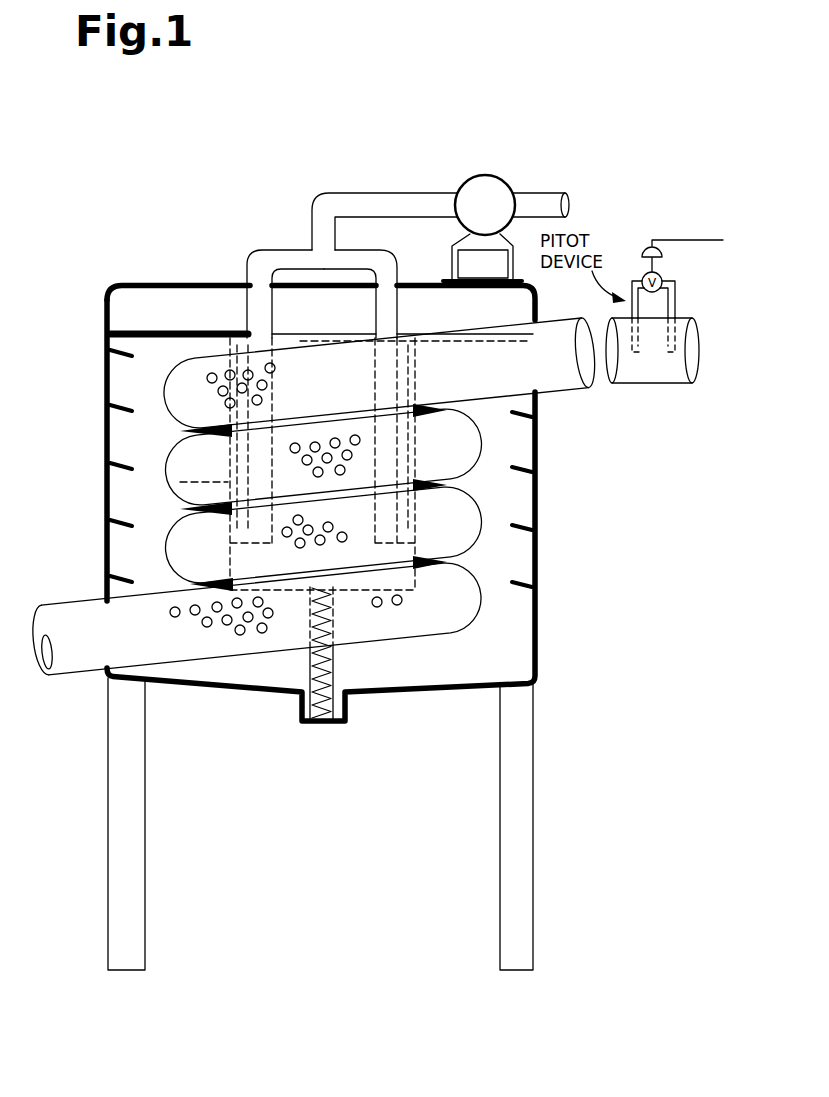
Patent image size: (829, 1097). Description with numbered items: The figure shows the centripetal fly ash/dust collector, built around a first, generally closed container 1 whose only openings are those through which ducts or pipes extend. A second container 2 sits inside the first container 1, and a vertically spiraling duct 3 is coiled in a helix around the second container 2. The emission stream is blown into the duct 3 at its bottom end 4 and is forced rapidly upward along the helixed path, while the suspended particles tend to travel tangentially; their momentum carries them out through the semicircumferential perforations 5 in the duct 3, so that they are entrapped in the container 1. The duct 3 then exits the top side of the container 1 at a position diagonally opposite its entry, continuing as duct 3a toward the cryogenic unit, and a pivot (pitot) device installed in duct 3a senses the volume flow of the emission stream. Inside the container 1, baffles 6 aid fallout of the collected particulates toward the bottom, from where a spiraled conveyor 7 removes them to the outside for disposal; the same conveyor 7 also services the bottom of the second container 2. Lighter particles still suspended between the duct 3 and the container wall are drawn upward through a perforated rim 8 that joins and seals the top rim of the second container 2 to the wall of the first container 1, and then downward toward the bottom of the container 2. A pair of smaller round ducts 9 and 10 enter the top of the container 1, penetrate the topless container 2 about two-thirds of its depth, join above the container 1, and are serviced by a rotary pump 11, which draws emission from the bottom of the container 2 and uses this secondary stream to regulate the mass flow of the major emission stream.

The first container 1 is at (104, 375).
The second container 2 is at (180, 483).
The spiraling duct 3 is at (556, 331).
The duct 3a is at (646, 385).
The bottom end 4 is at (58, 613).
The perforations 5 is at (187, 460).
The baffles 6 is at (108, 448).
The spiraled conveyor 7 is at (337, 667).
The perforated rim 8 is at (174, 330).
The round duct 9 is at (257, 276).
The round duct 10 is at (393, 283).
The rotary pump 11 is at (478, 190).